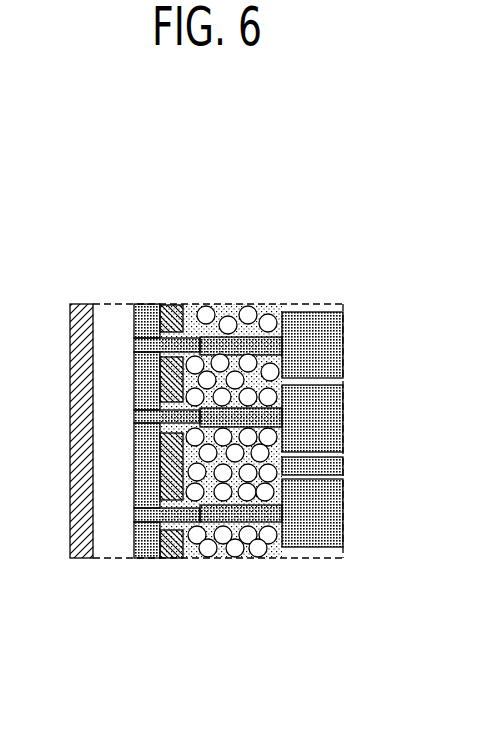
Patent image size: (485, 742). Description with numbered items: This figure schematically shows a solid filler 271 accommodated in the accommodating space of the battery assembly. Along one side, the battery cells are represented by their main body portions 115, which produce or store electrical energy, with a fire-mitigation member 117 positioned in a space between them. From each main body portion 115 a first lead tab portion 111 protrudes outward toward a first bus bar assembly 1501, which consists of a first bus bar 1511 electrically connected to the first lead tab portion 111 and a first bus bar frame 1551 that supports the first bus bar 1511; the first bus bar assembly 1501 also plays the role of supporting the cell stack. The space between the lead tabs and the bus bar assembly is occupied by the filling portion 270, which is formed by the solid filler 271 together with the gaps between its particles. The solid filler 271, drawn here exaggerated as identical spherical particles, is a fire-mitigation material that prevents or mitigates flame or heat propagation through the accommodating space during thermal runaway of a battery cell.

The first bus bar assembly 1501 is at (165, 378).
The first bus bar 1511 is at (153, 305).
The first bus bar frame 1551 is at (172, 305).
The first lead tab portion 111 is at (242, 345).
The main body portion 115 is at (314, 327).
The fire-mitigation member 117 is at (343, 465).
The filling portion 270 is at (218, 563).
The solid filler 271 is at (272, 540).